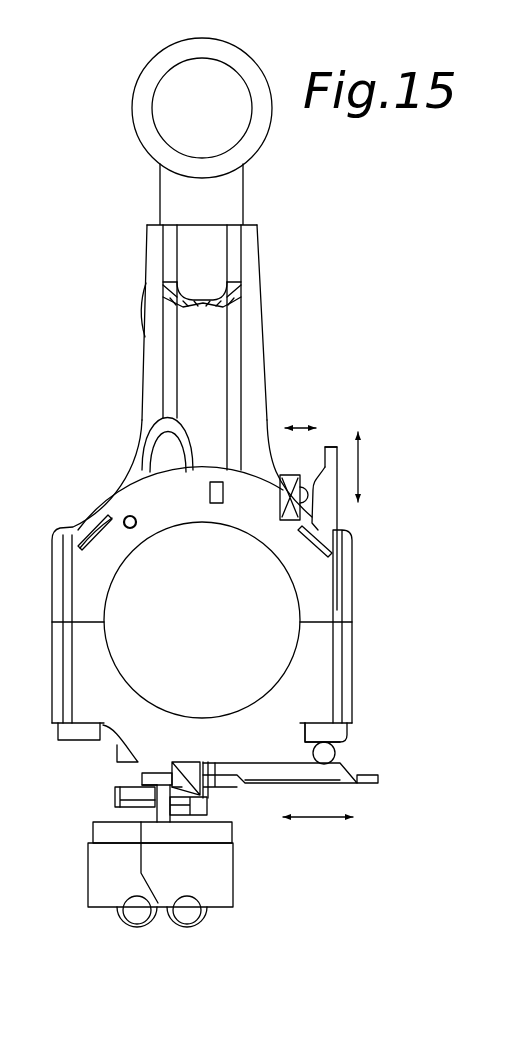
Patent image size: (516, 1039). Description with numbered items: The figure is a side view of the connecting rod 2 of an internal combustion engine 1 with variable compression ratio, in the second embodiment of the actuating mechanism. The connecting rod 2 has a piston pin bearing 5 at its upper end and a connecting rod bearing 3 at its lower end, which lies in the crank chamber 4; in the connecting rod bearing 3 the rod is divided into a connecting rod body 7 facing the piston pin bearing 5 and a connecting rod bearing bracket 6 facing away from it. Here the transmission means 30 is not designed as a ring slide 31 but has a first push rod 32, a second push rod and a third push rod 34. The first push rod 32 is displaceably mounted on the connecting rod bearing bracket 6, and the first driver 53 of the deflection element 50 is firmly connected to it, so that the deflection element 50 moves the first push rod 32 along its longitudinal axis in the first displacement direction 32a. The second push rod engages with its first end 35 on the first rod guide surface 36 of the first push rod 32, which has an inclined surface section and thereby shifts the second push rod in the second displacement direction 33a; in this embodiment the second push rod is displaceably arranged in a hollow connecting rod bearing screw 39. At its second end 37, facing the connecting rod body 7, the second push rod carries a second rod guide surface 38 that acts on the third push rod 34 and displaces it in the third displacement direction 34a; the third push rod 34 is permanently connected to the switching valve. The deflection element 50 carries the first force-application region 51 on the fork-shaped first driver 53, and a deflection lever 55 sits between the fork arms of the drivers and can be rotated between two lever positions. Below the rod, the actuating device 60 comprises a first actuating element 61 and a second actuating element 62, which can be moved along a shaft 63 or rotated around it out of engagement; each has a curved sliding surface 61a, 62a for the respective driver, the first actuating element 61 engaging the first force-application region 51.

The internal combustion engine 1 is at (322, 280).
The connecting rod 2 is at (105, 335).
The connecting rod bearing 3 is at (126, 567).
The crank chamber 4 is at (300, 374).
The piston pin bearing 5 is at (172, 143).
The connecting rod bearing bracket 6 is at (134, 749).
The connecting rod body 7 is at (104, 582).
The transmission means 30 is at (327, 774).
The ring slide 31 is at (312, 775).
The first push rod 32 is at (332, 473).
The first displacement direction 32a is at (320, 832).
The second displacement direction 33a is at (360, 460).
The third push rod 34 is at (179, 525).
The third displacement direction 34a is at (297, 426).
The first end 35 is at (316, 742).
The first rod guide surface 36 is at (380, 778).
The second end 37 is at (331, 503).
The second rod guide surface 38 is at (313, 468).
The connecting rod bearing screw 39 is at (336, 744).
The deflection element 50 is at (130, 779).
The first force-application region 51 is at (190, 797).
The first driver 53 is at (237, 785).
The deflection lever 55 is at (218, 772).
The actuating device 60 is at (199, 906).
The first actuating element 61 is at (236, 826).
The curved sliding surface 61a is at (201, 797).
The second actuating element 62 is at (144, 767).
The curved sliding surface 62a is at (148, 792).
The shaft 63 is at (137, 920).